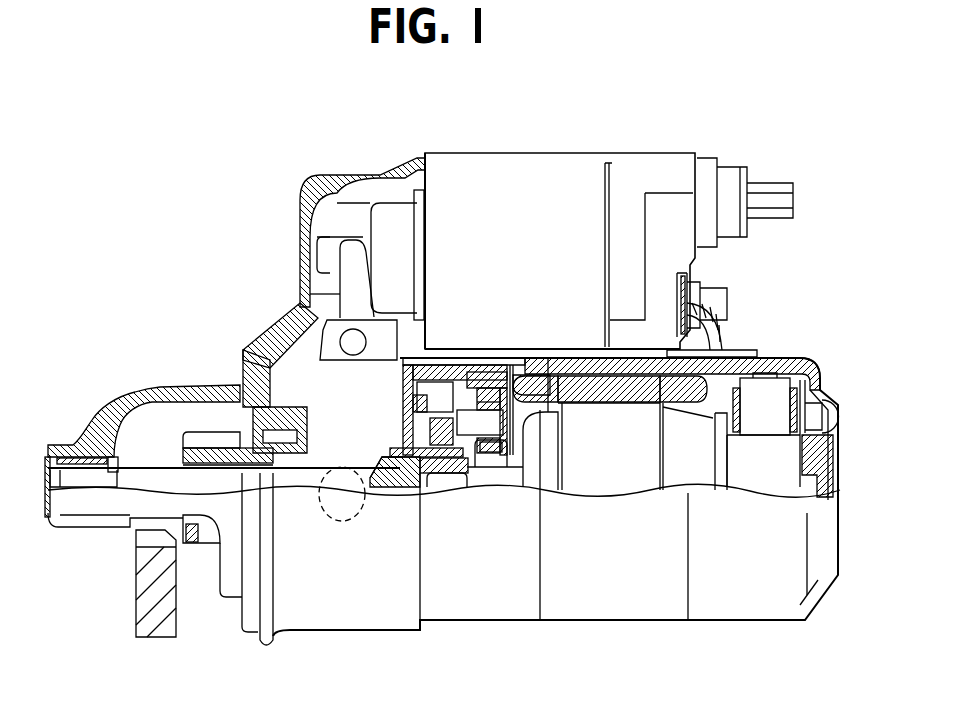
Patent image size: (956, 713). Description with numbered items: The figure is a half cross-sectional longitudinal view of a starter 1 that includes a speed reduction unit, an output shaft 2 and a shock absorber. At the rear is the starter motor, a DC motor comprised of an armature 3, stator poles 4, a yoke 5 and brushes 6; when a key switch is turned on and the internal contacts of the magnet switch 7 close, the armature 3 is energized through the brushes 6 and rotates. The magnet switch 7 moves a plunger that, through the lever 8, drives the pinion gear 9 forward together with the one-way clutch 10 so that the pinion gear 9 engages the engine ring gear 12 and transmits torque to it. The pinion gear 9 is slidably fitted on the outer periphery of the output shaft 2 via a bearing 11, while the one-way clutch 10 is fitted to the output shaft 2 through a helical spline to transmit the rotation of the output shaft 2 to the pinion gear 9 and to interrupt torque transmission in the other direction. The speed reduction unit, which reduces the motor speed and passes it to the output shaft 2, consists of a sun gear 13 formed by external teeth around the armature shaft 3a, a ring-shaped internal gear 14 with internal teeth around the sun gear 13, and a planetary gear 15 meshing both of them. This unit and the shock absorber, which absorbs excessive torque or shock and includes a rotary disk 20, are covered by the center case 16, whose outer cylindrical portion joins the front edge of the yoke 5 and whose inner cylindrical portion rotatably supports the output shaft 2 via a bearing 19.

The starter 1 is at (306, 143).
The output shaft 2 is at (150, 477).
The armature 3 is at (640, 477).
The armature shaft 3a is at (494, 482).
The stator poles 4 is at (610, 397).
The yoke 5 is at (627, 352).
The brushes 6 is at (777, 397).
The magnet switch 7 is at (559, 150).
The lever 8 is at (348, 285).
The pinion gear 9 is at (196, 437).
The one-way clutch 10 is at (288, 390).
The bearing 11 is at (203, 472).
The ring gear 12 is at (140, 617).
The sun gear 13 is at (506, 462).
The internal gear 14 is at (472, 355).
The planetary gear 15 is at (462, 474).
The center case 16 is at (495, 356).
The bearing 19 is at (408, 478).
The rotary disk 20 is at (322, 332).